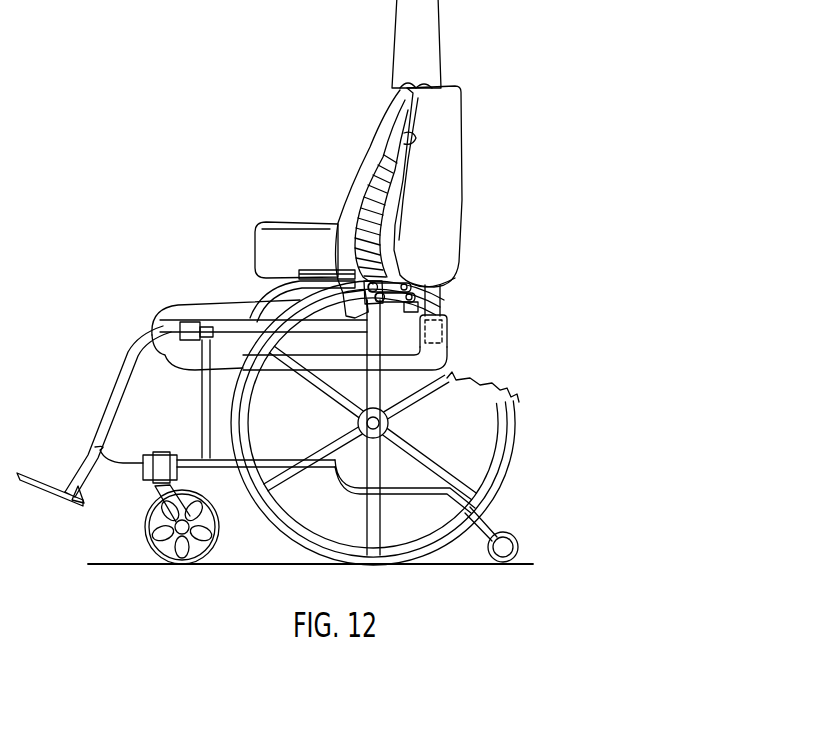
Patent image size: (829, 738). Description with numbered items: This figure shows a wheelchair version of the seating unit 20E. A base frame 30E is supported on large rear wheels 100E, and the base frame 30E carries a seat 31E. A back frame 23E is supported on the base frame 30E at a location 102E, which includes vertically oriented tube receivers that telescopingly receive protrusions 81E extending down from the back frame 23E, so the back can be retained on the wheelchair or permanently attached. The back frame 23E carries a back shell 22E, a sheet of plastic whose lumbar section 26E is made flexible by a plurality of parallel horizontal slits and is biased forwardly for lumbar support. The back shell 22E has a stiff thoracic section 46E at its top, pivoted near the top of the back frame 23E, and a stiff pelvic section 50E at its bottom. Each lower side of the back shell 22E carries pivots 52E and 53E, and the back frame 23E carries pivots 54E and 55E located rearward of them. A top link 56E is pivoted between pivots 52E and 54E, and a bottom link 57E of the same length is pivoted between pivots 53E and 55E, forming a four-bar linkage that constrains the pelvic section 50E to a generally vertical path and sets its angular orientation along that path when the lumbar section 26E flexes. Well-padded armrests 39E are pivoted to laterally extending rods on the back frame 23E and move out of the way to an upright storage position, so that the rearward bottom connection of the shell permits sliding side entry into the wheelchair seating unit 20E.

The seating unit 20E is at (500, 98).
The back shell 22E is at (383, 180).
The back frame 23E is at (463, 288).
The lumbar section 26E is at (373, 226).
The base frame 30E is at (218, 484).
The seat 31E is at (183, 302).
The armrests 39E is at (450, 168).
The thoracic section 46E is at (408, 139).
The pelvic section 50E is at (350, 305).
The pivot 52E is at (345, 271).
The pivot 53E is at (374, 306).
The pivot 54E is at (447, 279).
The pivot 55E is at (415, 315).
The top link 56E is at (388, 262).
The bottom link 57E is at (400, 276).
The protrusions 81E is at (446, 302).
The rear wheels 100E is at (518, 424).
The location 102E is at (448, 350).